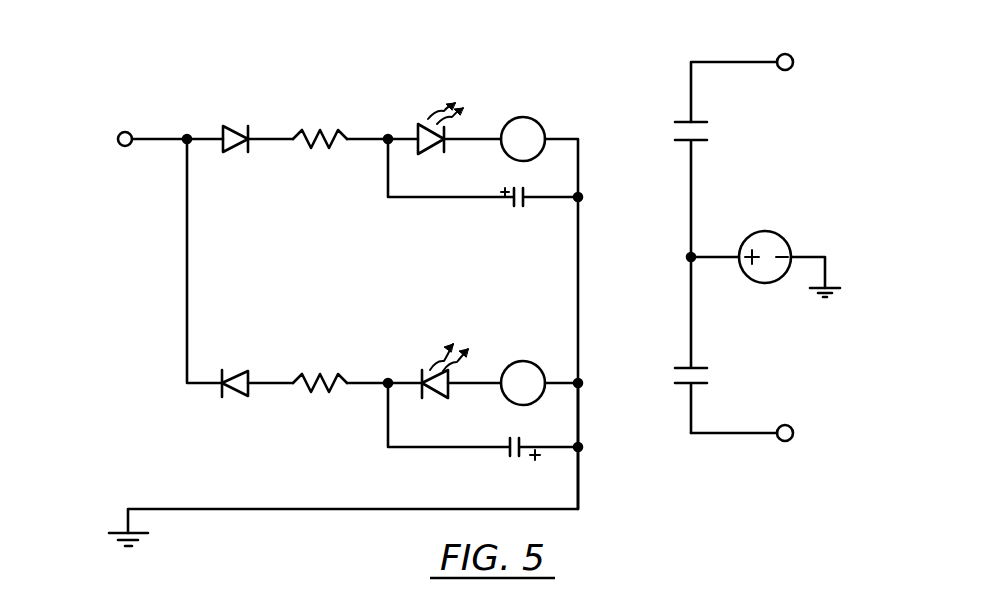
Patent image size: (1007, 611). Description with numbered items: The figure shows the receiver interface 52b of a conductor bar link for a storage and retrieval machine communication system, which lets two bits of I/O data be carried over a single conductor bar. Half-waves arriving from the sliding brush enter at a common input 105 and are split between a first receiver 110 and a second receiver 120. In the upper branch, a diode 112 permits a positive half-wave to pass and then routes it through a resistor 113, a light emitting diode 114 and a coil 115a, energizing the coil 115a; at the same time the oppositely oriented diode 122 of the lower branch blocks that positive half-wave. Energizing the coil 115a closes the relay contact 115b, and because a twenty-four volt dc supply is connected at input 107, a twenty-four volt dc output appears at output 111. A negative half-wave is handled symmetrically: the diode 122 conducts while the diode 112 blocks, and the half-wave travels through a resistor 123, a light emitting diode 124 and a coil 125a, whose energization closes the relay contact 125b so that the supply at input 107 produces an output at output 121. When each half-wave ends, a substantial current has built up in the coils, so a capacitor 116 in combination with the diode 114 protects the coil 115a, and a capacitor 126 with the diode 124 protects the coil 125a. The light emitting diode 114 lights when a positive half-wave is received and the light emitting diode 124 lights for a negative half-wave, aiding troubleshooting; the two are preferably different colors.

The receiver interface 52b is at (197, 86).
The input 105 is at (135, 106).
The input 107 is at (753, 230).
The first receiver 110 is at (432, 103).
The output 111 is at (797, 15).
The diode 112 is at (252, 104).
The resistor 113 is at (343, 104).
The light emitting diode 114 is at (428, 156).
The coil 115a is at (547, 99).
The relay contact 115b is at (707, 131).
The capacitor 116 is at (517, 211).
The second receiver 120 is at (170, 378).
The output 121 is at (788, 424).
The diode 122 is at (278, 332).
The resistor 123 is at (370, 333).
The light emitting diode 124 is at (436, 401).
The coil 125a is at (537, 342).
The relay contact 125b is at (707, 372).
The capacitor 126 is at (517, 467).